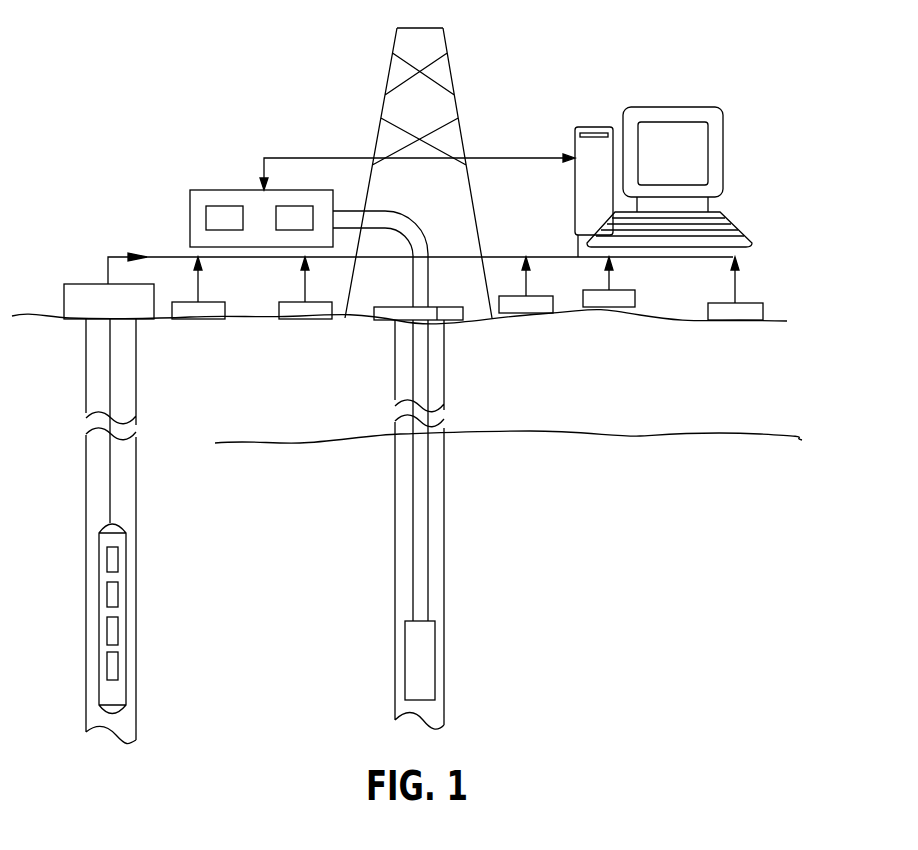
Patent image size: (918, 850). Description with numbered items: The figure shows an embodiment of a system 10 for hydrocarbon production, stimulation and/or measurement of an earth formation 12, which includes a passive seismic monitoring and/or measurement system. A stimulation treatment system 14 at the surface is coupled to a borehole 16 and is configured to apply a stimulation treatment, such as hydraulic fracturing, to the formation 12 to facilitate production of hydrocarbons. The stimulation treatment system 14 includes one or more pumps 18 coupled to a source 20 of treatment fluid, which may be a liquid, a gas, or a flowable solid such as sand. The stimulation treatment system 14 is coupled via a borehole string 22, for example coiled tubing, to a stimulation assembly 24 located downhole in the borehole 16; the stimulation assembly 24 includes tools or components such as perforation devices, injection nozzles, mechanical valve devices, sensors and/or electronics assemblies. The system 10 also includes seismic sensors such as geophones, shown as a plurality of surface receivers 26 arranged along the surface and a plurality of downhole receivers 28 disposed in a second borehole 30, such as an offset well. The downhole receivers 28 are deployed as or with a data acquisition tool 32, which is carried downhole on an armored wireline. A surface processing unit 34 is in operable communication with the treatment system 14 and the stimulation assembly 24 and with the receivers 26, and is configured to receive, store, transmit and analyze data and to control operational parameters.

The system 10 is at (302, 72).
The earth formation 12 is at (600, 534).
The stimulation treatment system 14 is at (190, 213).
The borehole 16 is at (404, 518).
The pump 18 is at (292, 206).
The source of treatment fluid 20 is at (224, 206).
The borehole string 22 is at (422, 546).
The stimulation assembly 24 is at (412, 662).
The surface receivers 26 is at (213, 316).
The downhole receivers 28 is at (116, 563).
The second borehole 30 is at (120, 478).
The data acquisition tool 32 is at (104, 613).
The surface processing unit 34 is at (590, 127).